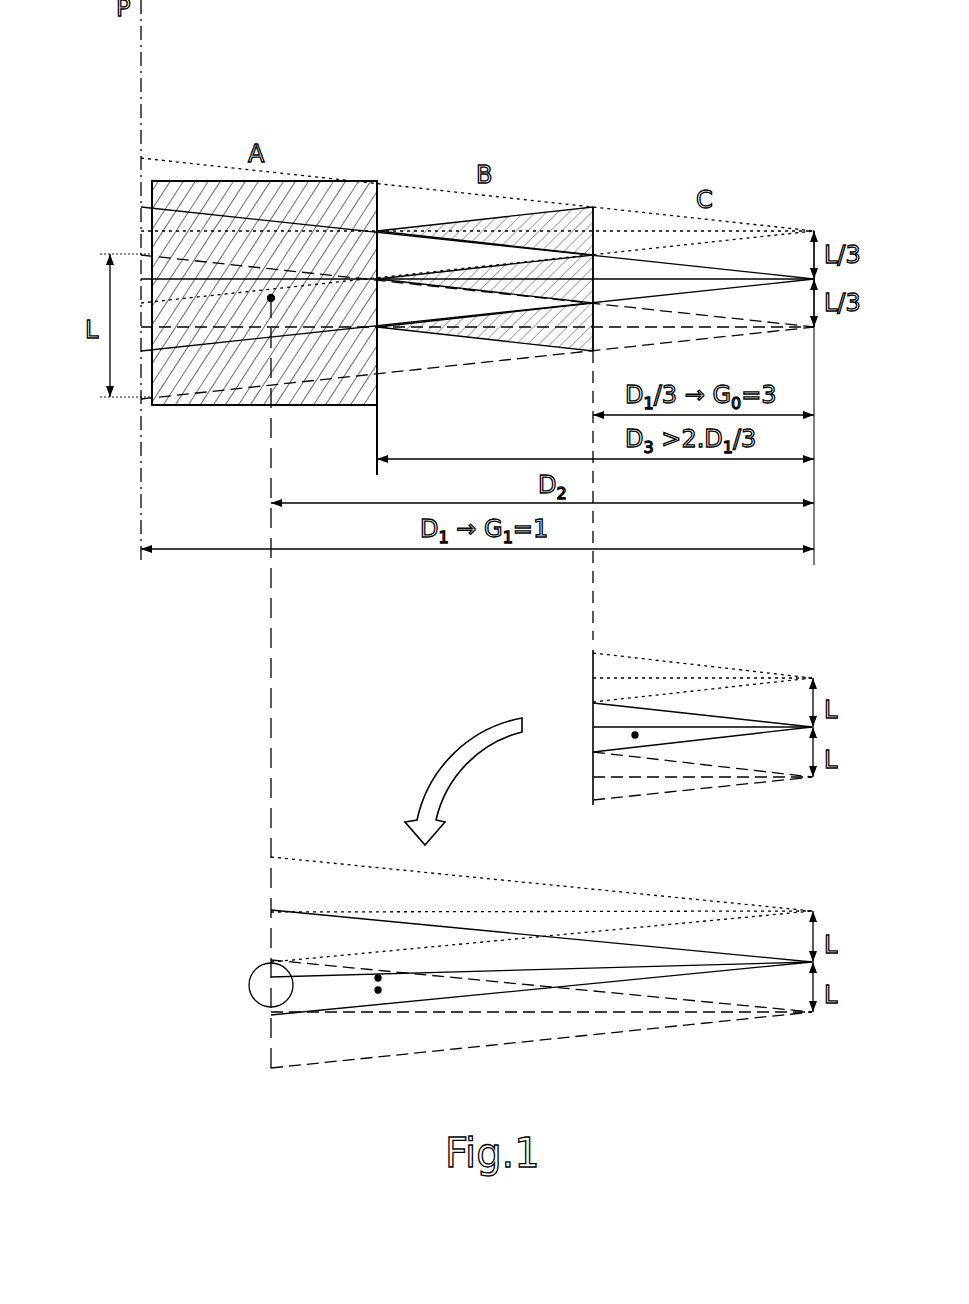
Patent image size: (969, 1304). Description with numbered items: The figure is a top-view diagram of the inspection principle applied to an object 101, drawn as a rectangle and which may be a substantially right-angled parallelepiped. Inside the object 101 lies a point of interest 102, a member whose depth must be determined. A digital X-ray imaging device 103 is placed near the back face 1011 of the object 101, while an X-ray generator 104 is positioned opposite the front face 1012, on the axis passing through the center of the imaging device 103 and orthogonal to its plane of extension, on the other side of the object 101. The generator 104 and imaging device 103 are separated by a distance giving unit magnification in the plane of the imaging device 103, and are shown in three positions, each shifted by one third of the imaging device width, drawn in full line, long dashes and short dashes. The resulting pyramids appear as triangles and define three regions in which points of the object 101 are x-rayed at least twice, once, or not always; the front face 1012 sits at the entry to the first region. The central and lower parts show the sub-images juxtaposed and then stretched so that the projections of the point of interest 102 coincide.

The object 101 is at (190, 186).
The back face 1011 is at (152, 212).
The front face 1012 is at (377, 385).
The point of interest 102 is at (277, 296).
The digital X-ray imaging device 103 is at (150, 378).
The X-ray generator 104 is at (814, 327).